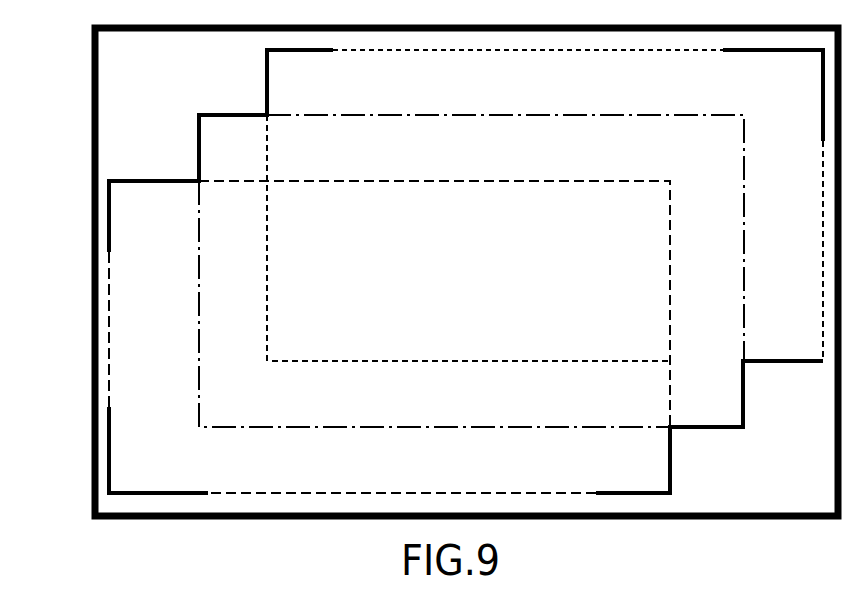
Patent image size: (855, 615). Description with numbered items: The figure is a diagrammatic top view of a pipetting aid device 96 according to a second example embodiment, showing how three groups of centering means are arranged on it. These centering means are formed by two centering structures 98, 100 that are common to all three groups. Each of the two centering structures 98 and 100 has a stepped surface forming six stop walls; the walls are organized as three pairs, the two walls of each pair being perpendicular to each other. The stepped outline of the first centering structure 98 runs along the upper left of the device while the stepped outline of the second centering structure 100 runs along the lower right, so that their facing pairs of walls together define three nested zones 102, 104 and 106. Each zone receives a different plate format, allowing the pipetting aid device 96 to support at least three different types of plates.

The pipetting aid device 96 is at (72, 259).
The centering structure 98 is at (198, 145).
The centering structure 100 is at (703, 430).
The zone 102 is at (110, 355).
The zone 104 is at (200, 280).
The zone 106 is at (289, 363).